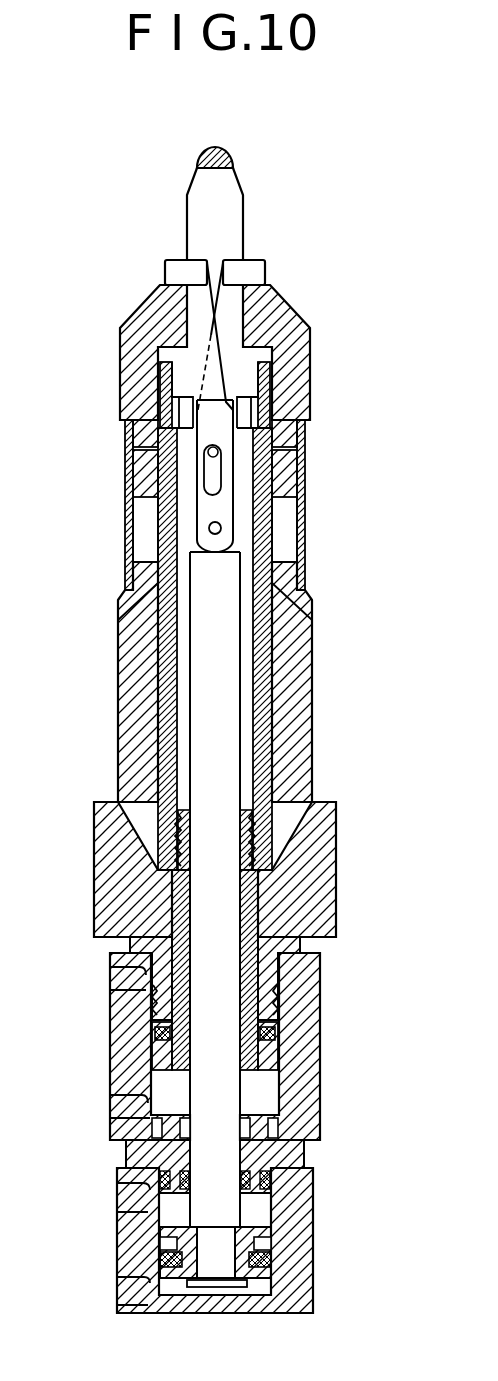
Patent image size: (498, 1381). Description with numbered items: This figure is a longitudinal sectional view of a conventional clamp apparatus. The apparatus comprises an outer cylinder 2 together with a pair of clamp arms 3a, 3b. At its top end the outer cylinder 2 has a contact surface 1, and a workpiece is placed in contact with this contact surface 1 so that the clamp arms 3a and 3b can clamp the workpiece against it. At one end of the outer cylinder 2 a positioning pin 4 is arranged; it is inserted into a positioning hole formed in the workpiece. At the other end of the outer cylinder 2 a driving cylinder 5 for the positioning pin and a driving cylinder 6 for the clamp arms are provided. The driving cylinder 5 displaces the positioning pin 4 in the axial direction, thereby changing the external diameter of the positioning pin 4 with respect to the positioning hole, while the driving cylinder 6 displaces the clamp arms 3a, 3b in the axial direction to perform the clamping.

The contact surface 1 is at (266, 273).
The outer cylinder 2 is at (304, 683).
The clamp arm 3a is at (172, 260).
The clamp arm 3b is at (252, 260).
The positioning pin 4 is at (233, 164).
The driving cylinder for a positioning pin 5 is at (321, 1048).
The driving cylinder for clamp arms 6 is at (316, 1248).